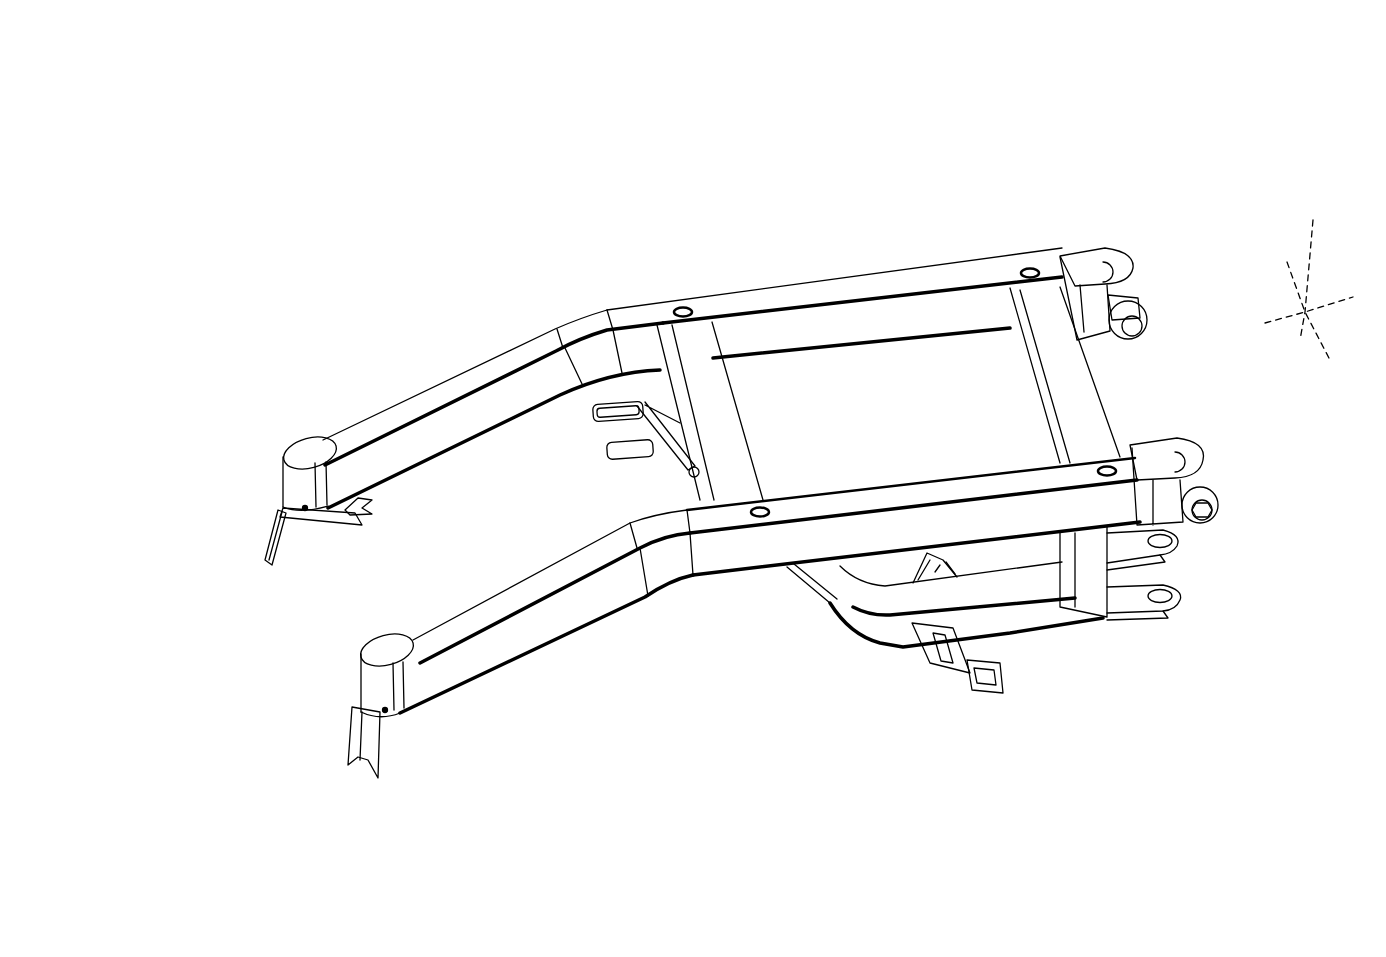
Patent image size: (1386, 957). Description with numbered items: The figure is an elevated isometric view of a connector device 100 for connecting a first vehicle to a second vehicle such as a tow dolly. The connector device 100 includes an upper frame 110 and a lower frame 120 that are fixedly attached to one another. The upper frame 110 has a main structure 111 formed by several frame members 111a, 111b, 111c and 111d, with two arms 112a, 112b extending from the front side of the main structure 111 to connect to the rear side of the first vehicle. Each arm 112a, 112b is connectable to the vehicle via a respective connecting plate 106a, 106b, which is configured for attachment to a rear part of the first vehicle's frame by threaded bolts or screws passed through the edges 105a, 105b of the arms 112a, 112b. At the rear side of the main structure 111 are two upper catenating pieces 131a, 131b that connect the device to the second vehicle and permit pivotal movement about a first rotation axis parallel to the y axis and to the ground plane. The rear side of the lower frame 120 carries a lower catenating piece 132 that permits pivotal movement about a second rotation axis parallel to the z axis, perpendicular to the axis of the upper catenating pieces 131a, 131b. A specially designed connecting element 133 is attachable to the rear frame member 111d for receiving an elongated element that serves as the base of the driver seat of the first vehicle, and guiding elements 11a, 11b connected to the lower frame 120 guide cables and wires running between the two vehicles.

The connector device 100 is at (505, 144).
The upper frame 110 is at (903, 265).
The main structure 111 is at (875, 265).
The frame member 111a is at (848, 290).
The frame member 111b is at (857, 493).
The frame member 111c is at (1047, 393).
The rear frame member 111d is at (700, 345).
The arm 112a is at (493, 363).
The arm 112b is at (615, 592).
The edge of arm 105a is at (308, 447).
The edge of arm 105b is at (382, 640).
The connecting plate 106a is at (270, 552).
The connecting plate 106b is at (358, 740).
The lower frame 120 is at (832, 597).
The upper catenating piece 131a is at (1088, 268).
The upper catenating piece 131b is at (1168, 460).
The lower catenating piece 132 is at (1135, 622).
The connecting element 133 is at (667, 443).
The guiding element 11a is at (937, 553).
The guiding element 11b is at (977, 690).